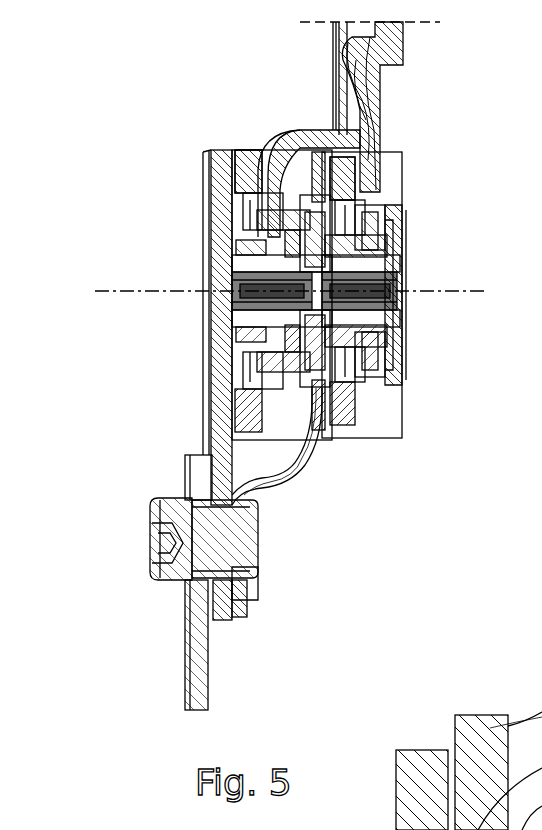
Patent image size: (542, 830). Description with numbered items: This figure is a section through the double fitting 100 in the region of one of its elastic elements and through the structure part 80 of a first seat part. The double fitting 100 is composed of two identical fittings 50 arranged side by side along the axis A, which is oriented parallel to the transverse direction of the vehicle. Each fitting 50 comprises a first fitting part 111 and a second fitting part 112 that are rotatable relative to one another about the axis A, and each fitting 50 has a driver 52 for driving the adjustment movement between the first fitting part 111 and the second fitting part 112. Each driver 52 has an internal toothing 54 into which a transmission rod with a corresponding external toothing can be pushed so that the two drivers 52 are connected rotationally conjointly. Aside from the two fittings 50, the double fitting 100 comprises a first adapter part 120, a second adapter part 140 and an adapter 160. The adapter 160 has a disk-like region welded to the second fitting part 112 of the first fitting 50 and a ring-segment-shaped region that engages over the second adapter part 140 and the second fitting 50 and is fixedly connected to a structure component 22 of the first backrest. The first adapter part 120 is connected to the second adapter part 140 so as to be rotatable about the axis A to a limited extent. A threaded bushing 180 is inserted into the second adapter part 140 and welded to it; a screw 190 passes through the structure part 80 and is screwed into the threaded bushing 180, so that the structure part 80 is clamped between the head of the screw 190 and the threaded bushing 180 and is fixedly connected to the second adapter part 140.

The structure component 22 is at (398, 52).
The adapter 160 is at (363, 125).
The first fitting part 111 is at (248, 152).
The second fitting part 112 is at (273, 157).
The driver 52 is at (236, 264).
The internal toothing 54 is at (242, 291).
The fitting 50 is at (258, 110).
The double fitting 100 is at (329, 502).
The threaded bushing 180 is at (254, 580).
The second adapter part 140 is at (248, 618).
The first adapter part 120 is at (216, 618).
The screw 190 is at (179, 584).
The structure part 80 is at (197, 712).
The axis A is at (125, 292).